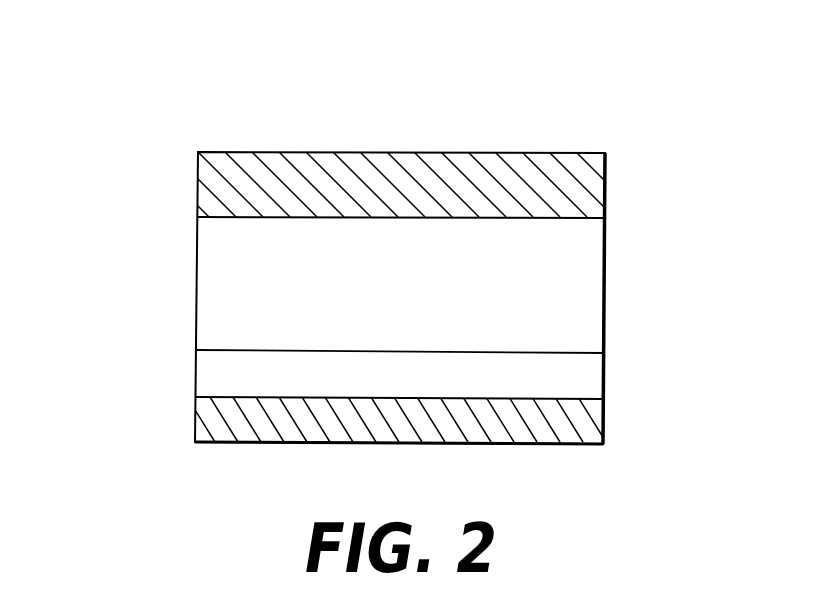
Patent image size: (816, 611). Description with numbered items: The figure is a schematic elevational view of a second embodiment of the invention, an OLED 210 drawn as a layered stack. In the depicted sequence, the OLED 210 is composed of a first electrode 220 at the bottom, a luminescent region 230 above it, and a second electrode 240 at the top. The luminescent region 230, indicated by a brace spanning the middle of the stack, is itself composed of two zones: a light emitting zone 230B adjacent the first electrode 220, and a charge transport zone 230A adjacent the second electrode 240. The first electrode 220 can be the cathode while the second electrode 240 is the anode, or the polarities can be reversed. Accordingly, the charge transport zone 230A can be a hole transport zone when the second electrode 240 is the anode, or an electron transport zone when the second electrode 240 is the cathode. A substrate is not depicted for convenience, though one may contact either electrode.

The OLED 210 is at (500, 112).
The first electrode 220 is at (590, 419).
The luminescent region 230 is at (188, 215).
The charge transport zone 230A is at (593, 281).
The light emitting zone 230B is at (590, 370).
The second electrode 240 is at (595, 187).